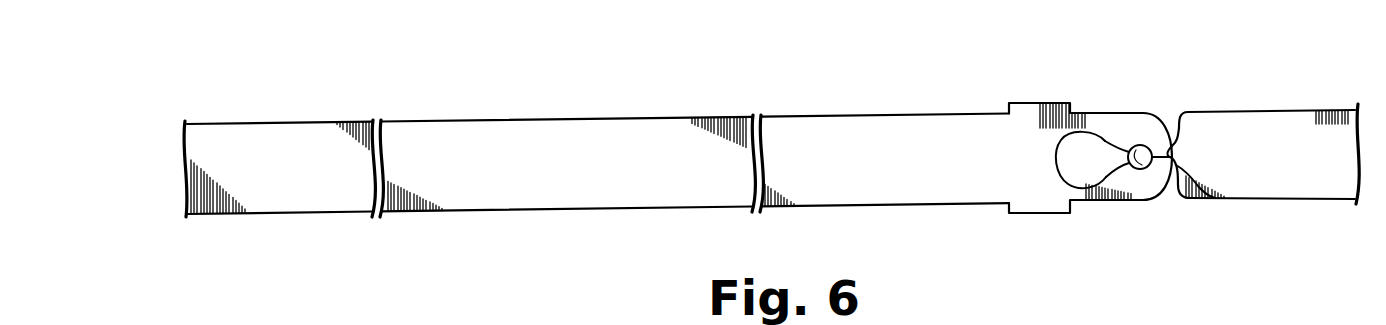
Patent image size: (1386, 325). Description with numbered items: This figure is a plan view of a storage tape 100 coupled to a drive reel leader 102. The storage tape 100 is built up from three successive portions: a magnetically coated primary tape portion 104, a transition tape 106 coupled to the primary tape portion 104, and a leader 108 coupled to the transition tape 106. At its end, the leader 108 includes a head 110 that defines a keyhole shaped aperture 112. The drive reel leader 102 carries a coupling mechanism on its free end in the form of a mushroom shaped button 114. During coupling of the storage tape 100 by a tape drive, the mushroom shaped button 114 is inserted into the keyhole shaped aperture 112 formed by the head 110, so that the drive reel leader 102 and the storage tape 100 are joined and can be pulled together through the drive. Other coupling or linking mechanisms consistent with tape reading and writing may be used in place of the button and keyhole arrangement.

The storage tape 100 is at (647, 67).
The drive reel leader 102 is at (1280, 112).
The primary tape portion 104 is at (267, 123).
The transition tape 106 is at (465, 122).
The leader 108 is at (842, 115).
The head 110 is at (1110, 113).
The keyhole shaped aperture 112 is at (1060, 149).
The mushroom shaped button 114 is at (1210, 201).